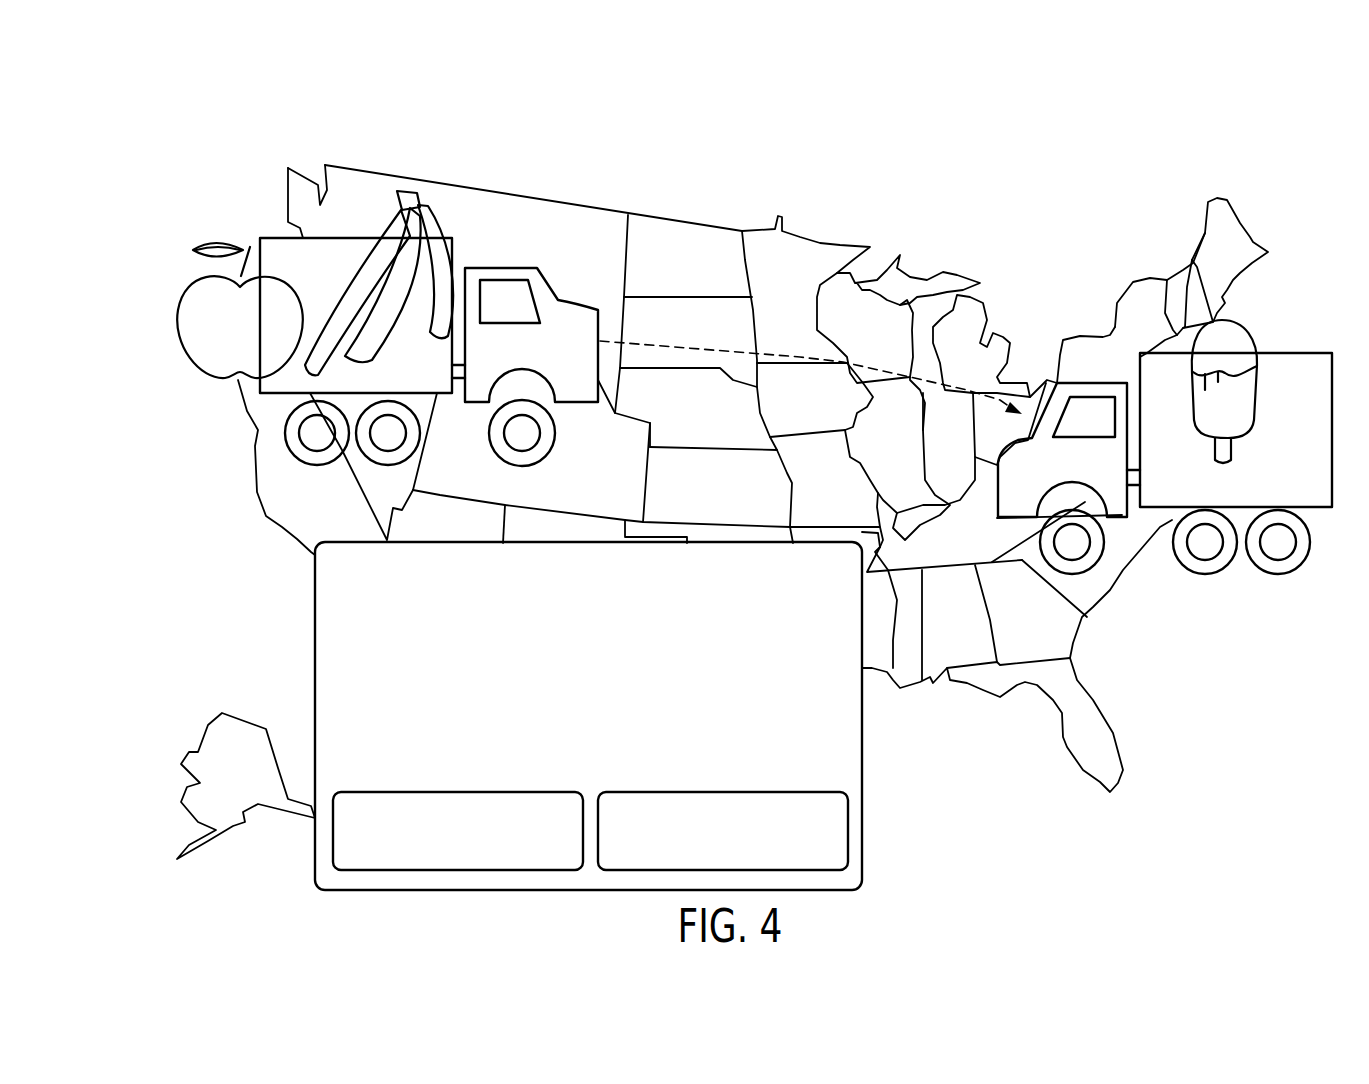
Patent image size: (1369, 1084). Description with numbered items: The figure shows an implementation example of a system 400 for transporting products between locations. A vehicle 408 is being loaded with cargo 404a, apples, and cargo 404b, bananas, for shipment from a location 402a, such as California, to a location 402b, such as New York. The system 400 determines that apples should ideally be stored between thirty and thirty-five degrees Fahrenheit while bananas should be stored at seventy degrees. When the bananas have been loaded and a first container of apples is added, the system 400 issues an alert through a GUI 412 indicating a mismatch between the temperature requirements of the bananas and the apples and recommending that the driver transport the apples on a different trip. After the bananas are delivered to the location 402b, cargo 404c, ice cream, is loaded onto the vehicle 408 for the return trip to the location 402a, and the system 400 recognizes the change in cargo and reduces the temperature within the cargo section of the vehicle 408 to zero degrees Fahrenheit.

The system 400 is at (135, 135).
The location 402a is at (255, 180).
The location 402b is at (1102, 365).
The cargo 404a is at (185, 343).
The cargo 404b is at (403, 198).
The cargo 404c is at (1247, 337).
The vehicle 408 is at (540, 300).
The GUI 412 is at (328, 644).